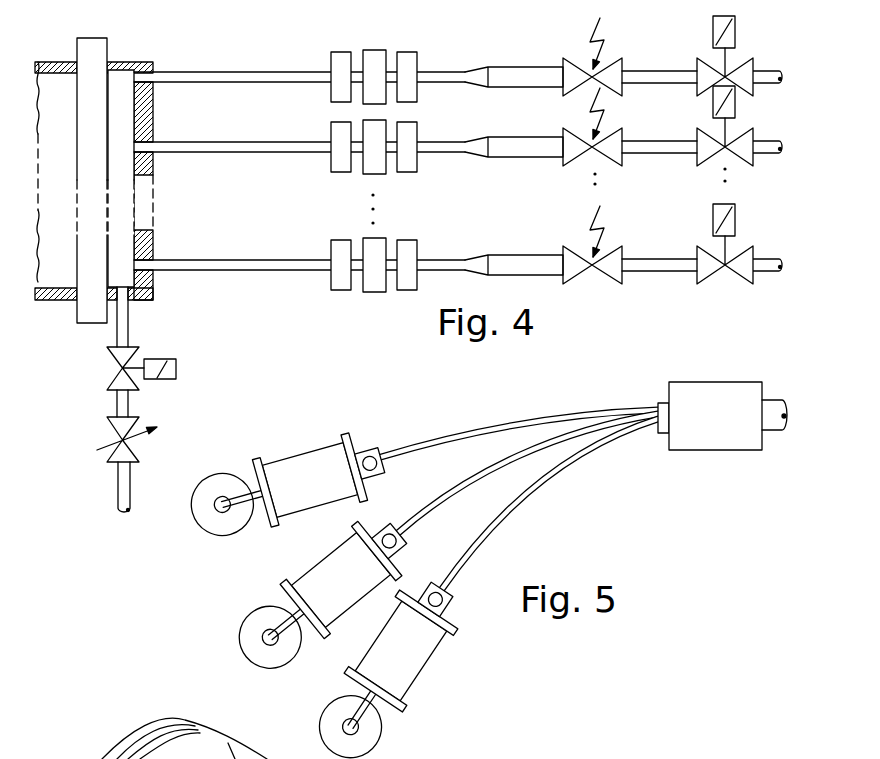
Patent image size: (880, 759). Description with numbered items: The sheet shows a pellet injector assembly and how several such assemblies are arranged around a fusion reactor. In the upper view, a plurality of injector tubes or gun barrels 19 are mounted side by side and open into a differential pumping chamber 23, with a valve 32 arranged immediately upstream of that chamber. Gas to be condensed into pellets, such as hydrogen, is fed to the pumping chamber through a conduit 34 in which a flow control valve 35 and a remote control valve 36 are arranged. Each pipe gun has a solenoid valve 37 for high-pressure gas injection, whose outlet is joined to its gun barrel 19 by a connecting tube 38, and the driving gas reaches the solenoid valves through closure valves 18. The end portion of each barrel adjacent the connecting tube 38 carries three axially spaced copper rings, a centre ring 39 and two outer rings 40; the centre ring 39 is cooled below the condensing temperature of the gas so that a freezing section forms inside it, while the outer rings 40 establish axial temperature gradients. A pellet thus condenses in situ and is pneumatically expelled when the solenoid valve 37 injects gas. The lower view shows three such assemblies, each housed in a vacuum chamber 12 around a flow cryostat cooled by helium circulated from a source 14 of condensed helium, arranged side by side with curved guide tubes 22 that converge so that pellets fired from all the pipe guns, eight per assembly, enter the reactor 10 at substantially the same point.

In FIG. 5, the reactor 10 is at (772, 425).
In FIG. 5, the vacuum chamber 12 is at (313, 453).
In FIG. 5, the source of condensed helium 14 is at (210, 532).
In FIG. 4, the closure valve 18 is at (742, 55).
In FIG. 4, the injector tube or gun barrel 19 is at (236, 112).
In FIG. 5, the guide tube 22 is at (497, 424).
In FIG. 4, the differential pumping chamber 23 is at (58, 152).
In FIG. 4, the valve 32 is at (100, 50).
In FIG. 4, the conduit 34 is at (128, 321).
In FIG. 4, the flow control valve 35 is at (107, 440).
In FIG. 4, the remote control valve 36 is at (107, 368).
In FIG. 4, the solenoid valve 37 is at (620, 56).
In FIG. 4, the connecting tube 38 is at (524, 70).
In FIG. 4, the centre metal ring 39 is at (374, 60).
In FIG. 4, the outer metal ring 40 is at (331, 66).